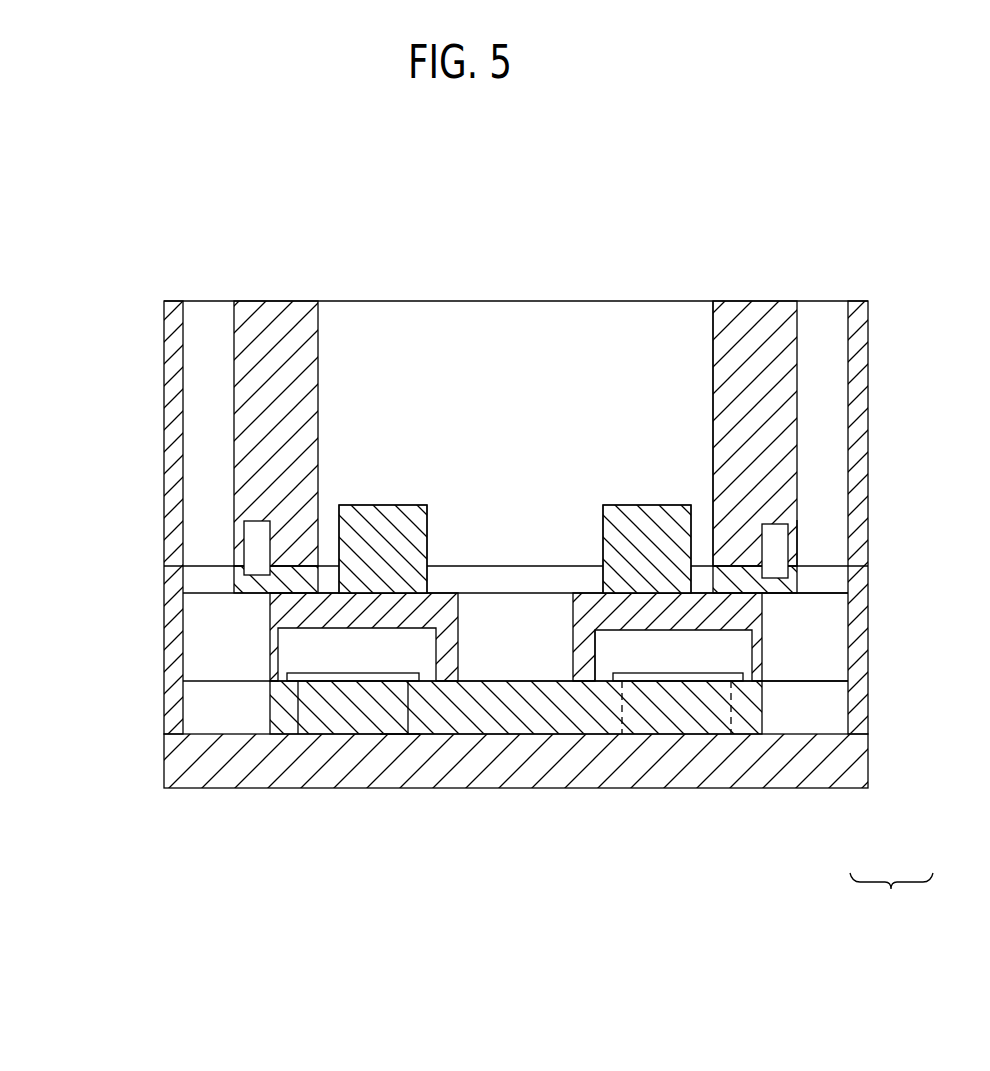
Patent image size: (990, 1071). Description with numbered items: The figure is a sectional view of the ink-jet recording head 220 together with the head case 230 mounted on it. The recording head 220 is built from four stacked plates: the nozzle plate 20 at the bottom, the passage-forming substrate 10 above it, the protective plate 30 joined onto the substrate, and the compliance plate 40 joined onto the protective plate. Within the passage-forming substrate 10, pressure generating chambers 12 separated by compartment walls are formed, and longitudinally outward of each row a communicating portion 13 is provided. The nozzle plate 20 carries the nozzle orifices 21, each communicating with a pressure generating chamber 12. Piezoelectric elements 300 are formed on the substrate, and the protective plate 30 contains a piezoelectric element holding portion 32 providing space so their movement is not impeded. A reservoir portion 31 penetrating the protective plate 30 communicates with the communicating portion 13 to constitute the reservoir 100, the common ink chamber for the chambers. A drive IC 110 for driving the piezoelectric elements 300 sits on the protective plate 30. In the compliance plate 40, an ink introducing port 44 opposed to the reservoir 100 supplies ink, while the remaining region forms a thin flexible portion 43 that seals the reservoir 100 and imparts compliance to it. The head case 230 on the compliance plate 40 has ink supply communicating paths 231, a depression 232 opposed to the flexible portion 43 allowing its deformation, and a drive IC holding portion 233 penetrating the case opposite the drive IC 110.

The passage-forming substrate 10 is at (172, 690).
The pressure generating chamber 12 is at (313, 715).
The communicating portion 13 is at (817, 715).
The nozzle plate 20 is at (180, 757).
The nozzle orifice 21 is at (398, 735).
The protective plate 30 is at (173, 627).
The reservoir portion 31 is at (833, 667).
The piezoelectric element holding portion 32 is at (605, 653).
The compliance plate 40 is at (170, 570).
The flexible portion 43 is at (246, 545).
The ink introducing port 44 is at (855, 598).
The reservoir 100 is at (891, 898).
The drive IC 110 is at (380, 523).
The ink-jet recording head 220 is at (877, 583).
The head case 230 is at (758, 335).
The ink supply communicating path 231 is at (846, 336).
The depression 232 is at (772, 527).
The drive IC holding portion 233 is at (712, 350).
The piezoelectric element 300 is at (685, 675).